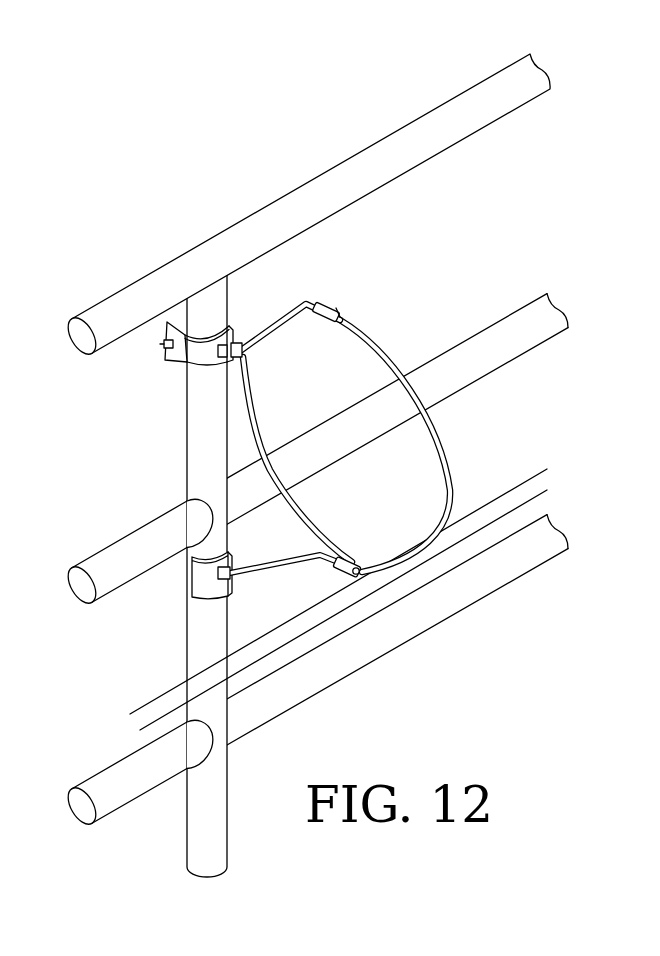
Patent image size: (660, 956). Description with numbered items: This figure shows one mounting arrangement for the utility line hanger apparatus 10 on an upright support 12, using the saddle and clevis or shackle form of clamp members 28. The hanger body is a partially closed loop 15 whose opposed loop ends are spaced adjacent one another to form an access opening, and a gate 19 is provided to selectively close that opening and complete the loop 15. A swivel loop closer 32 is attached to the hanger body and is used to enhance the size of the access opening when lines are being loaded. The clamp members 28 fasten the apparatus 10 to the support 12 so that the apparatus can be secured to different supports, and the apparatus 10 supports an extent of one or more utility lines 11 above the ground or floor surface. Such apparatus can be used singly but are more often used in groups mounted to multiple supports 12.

The utility line hanger apparatus 10 is at (332, 458).
The utility lines 11 is at (167, 718).
The upright support 12 is at (198, 465).
The loop 15 is at (448, 419).
The gate 19 is at (343, 298).
The clamp members 28 is at (198, 365).
The swivel loop closer 32 is at (283, 350).